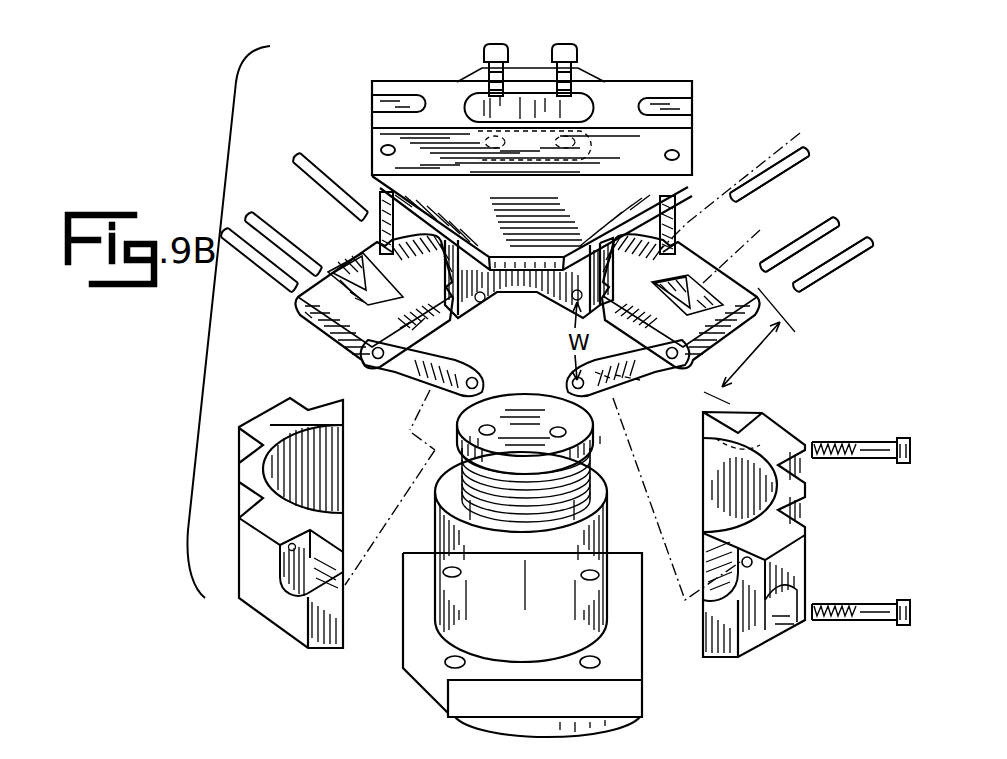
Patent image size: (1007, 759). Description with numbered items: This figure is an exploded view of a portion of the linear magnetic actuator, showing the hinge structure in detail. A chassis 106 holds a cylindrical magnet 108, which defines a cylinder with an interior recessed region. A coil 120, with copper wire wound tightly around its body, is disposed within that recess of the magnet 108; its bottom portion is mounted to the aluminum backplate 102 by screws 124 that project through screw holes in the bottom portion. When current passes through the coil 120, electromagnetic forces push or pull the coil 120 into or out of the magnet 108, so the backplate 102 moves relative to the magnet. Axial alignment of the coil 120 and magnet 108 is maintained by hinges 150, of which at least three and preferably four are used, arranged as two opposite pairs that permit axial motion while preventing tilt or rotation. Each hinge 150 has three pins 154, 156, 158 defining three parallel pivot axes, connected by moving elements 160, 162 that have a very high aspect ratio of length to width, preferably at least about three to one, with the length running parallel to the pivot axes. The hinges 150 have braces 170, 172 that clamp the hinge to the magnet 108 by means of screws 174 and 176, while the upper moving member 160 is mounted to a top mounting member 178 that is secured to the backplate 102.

The aluminum backplate 102 is at (678, 186).
The chassis 106 is at (634, 670).
The cylindrical magnet 108 is at (600, 480).
The coil 120 is at (525, 400).
The screws 124 is at (560, 74).
The hinges 150 is at (274, 328).
The pin 154 is at (793, 145).
The pin 156 is at (824, 214).
The pin 158 is at (895, 216).
The upper moving member 160 is at (688, 260).
The moving element 162 is at (620, 388).
The brace 170 is at (775, 436).
The brace 172 is at (270, 414).
The screw 174 is at (872, 604).
The screw 176 is at (872, 441).
The top mounting member 178 is at (480, 257).